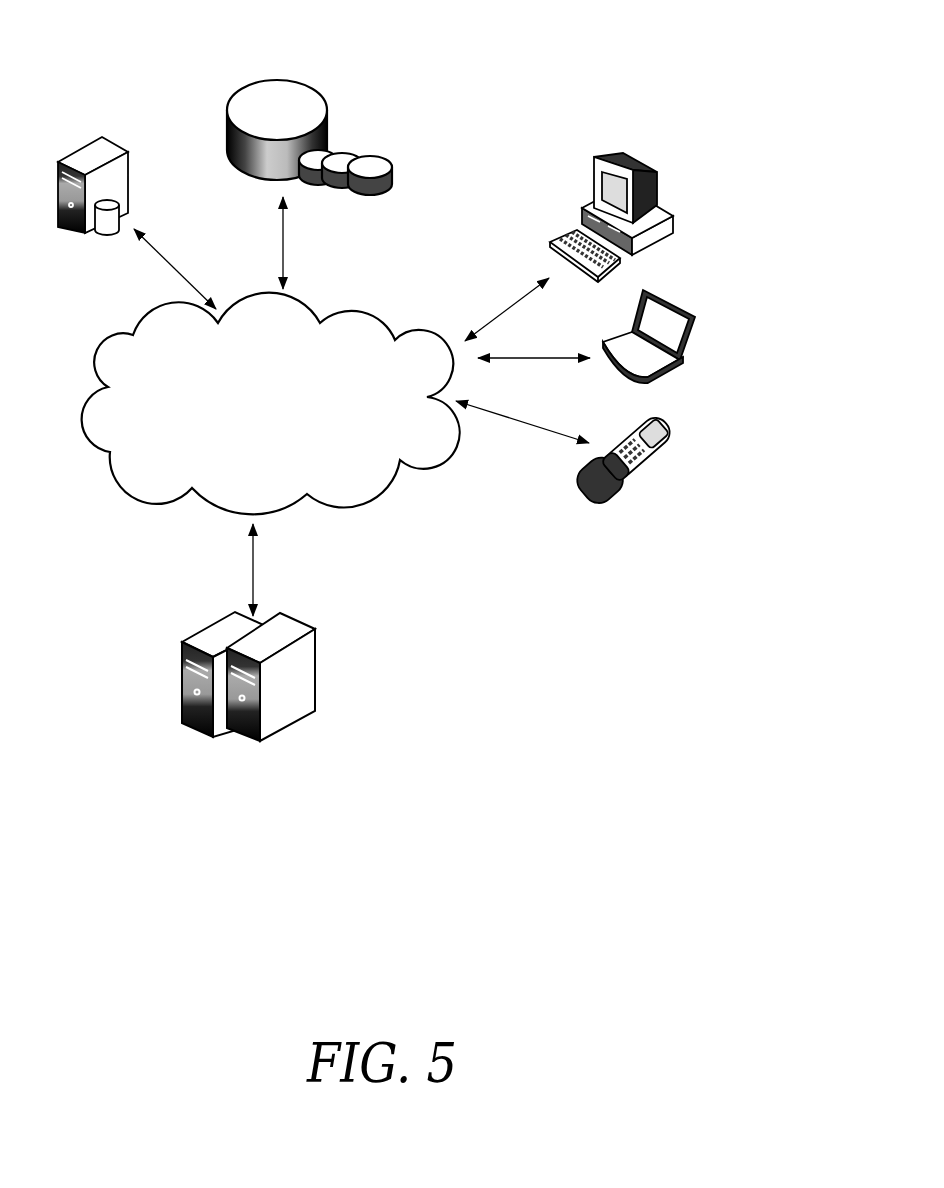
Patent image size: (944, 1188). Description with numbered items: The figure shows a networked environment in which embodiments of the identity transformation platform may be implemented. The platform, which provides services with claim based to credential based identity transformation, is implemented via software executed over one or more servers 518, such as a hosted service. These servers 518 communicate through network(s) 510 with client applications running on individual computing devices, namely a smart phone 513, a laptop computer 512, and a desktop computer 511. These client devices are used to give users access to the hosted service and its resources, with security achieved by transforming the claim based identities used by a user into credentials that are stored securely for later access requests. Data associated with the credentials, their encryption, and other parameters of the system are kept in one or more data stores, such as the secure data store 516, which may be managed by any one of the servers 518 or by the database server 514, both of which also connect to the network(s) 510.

The network(s) 510 is at (328, 272).
The desktop computer 511 is at (660, 140).
The laptop computer 512 is at (697, 288).
The smart phone 513 is at (664, 420).
The database server 514 is at (100, 242).
The secure data store 516 is at (296, 54).
The servers 518 is at (213, 615).